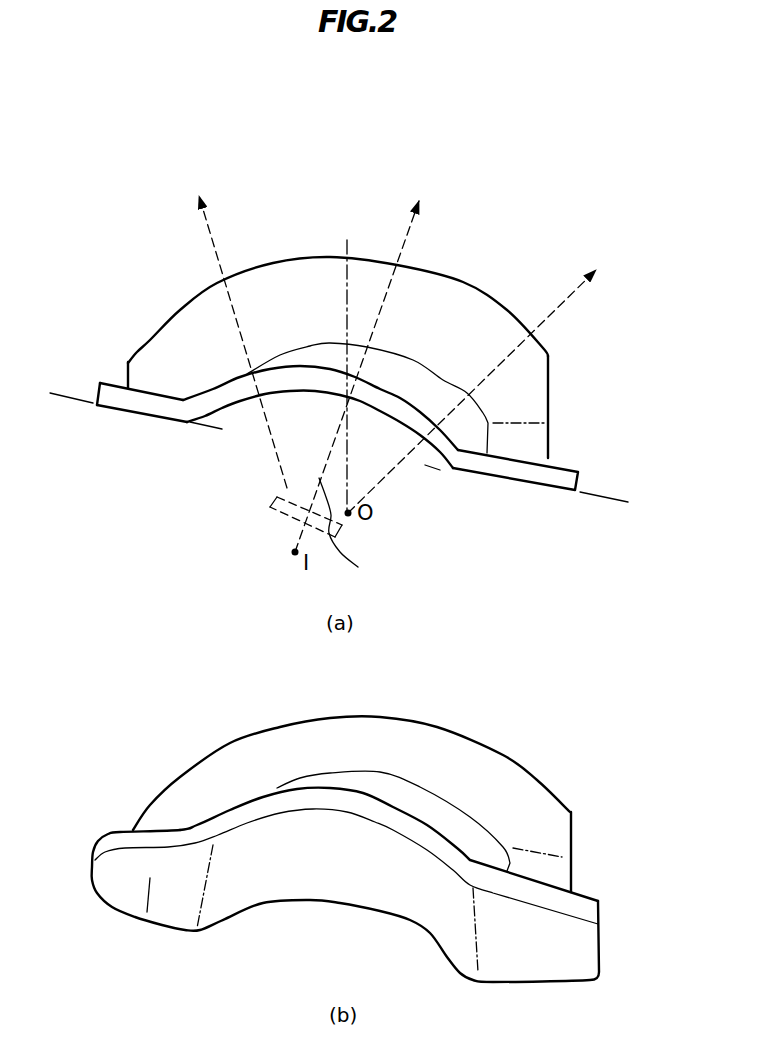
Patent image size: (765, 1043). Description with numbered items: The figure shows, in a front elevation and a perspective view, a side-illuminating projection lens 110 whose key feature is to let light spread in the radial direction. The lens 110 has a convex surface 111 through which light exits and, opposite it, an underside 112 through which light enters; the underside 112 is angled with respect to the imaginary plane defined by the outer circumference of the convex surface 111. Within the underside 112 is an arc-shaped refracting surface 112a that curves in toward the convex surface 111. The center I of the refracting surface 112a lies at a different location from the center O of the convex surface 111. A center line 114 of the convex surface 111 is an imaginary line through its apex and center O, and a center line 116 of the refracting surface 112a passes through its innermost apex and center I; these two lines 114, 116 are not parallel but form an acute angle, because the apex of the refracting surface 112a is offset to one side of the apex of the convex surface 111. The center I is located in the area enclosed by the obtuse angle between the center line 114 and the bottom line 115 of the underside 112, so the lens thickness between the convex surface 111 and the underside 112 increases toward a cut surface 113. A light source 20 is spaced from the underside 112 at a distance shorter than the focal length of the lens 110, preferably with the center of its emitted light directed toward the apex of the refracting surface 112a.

The side-illuminating projection lens 110 is at (316, 244).
The convex surface 111 is at (463, 281).
The underside 112 is at (153, 417).
The arc-shaped refracting surface 112a is at (293, 392).
The cut surface 113 is at (550, 393).
The center line of the convex surface 114 is at (348, 243).
The bottom line of the underside 115 is at (603, 497).
The center line of the refracting surface 116 is at (358, 532).
The light source 20 is at (268, 511).